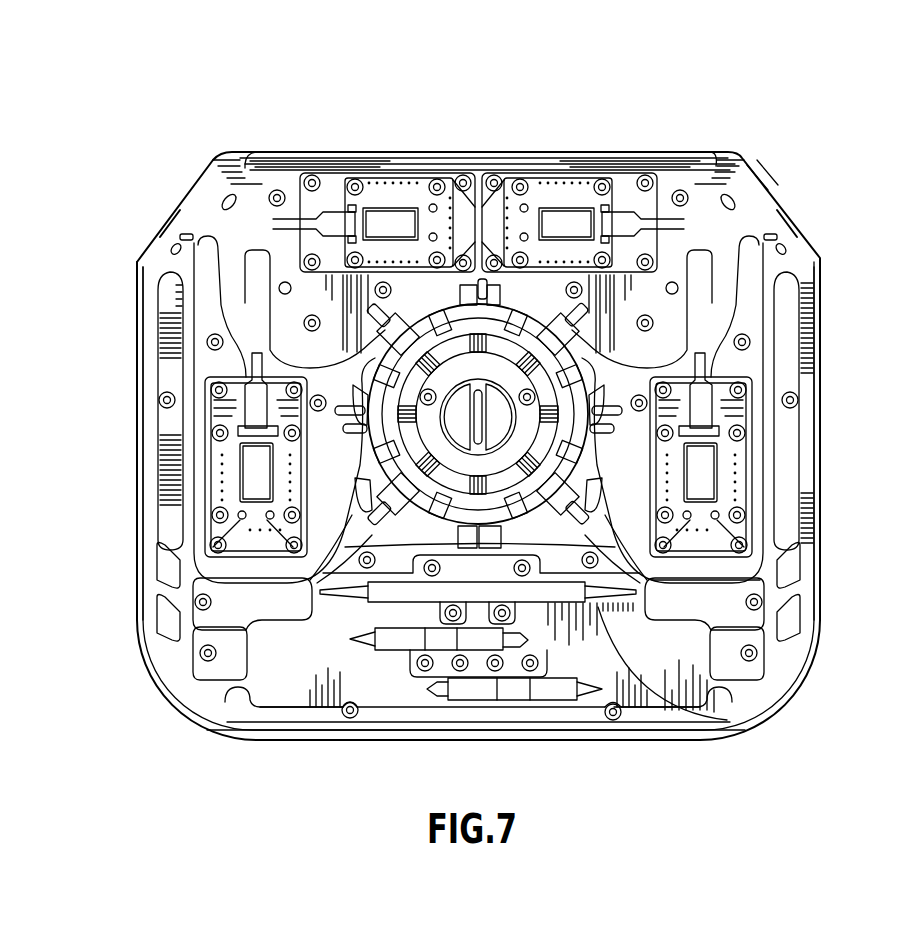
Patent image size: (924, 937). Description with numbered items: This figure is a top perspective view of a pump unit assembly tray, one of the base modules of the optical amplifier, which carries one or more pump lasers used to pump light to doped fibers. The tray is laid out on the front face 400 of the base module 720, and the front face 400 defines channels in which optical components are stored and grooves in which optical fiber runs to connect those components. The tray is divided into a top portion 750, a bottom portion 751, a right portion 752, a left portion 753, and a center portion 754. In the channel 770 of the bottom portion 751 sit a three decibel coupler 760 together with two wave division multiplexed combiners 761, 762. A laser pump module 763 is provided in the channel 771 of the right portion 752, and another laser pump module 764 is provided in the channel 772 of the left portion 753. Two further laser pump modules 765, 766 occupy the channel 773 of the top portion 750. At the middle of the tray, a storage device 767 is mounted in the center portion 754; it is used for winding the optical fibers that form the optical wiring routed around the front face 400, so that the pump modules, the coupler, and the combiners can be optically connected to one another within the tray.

The base module 720 is at (789, 88).
The front face 400 is at (770, 212).
The top portion 750 is at (565, 150).
The bottom portion 751 is at (450, 747).
The right portion 752 is at (820, 366).
The left portion 753 is at (140, 345).
The center portion 754 is at (490, 403).
The 3 dB coupler 760 is at (590, 605).
The wave division multiplexed combiner 761 is at (390, 650).
The wave division multiplexed combiner 762 is at (505, 680).
The laser pump module 763 is at (723, 532).
The laser pump module 764 is at (243, 530).
The laser pump module 765 is at (400, 185).
The laser pump module 766 is at (488, 185).
The storage device 767 is at (557, 405).
The channel 770 is at (673, 660).
The channel 771 is at (633, 463).
The channel 772 is at (340, 442).
The channel 773 is at (307, 303).